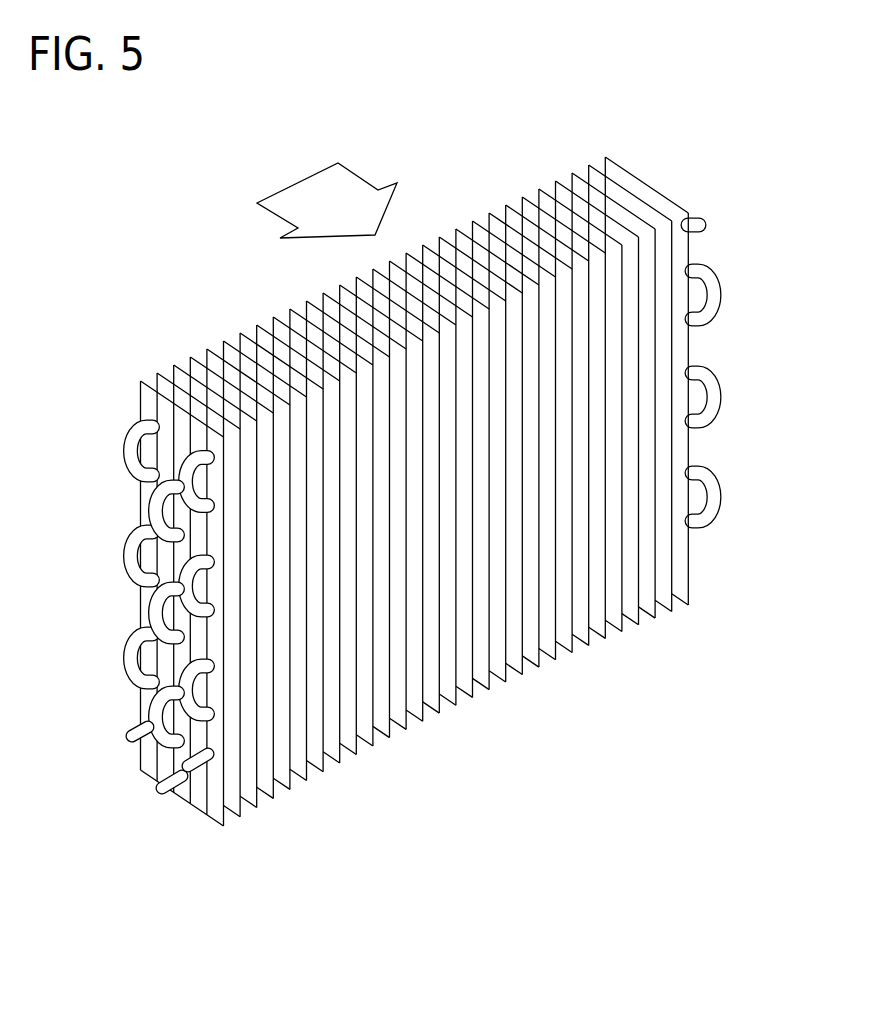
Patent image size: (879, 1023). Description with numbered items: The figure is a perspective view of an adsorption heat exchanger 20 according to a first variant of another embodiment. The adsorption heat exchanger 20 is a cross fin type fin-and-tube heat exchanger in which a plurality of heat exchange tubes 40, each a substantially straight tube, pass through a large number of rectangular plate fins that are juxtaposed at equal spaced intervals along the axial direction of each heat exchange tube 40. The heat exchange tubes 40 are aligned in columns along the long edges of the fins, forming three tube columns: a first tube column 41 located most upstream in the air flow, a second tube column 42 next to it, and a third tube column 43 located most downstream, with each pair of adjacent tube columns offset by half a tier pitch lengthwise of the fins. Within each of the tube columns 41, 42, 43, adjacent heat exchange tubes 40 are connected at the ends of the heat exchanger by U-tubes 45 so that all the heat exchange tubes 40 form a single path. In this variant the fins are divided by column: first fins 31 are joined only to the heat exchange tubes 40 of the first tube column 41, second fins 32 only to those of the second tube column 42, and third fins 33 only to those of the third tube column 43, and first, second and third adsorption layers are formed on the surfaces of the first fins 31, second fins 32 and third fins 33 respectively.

The adsorption heat exchanger 20 is at (653, 673).
The first fins 31 is at (550, 195).
The second fins 32 is at (645, 192).
The third fins 33 is at (372, 740).
The heat exchange tube 40 is at (130, 732).
The first tube column 41 is at (131, 430).
The second tube column 42 is at (152, 496).
The third tube column 43 is at (199, 450).
The U-tube 45 is at (720, 522).